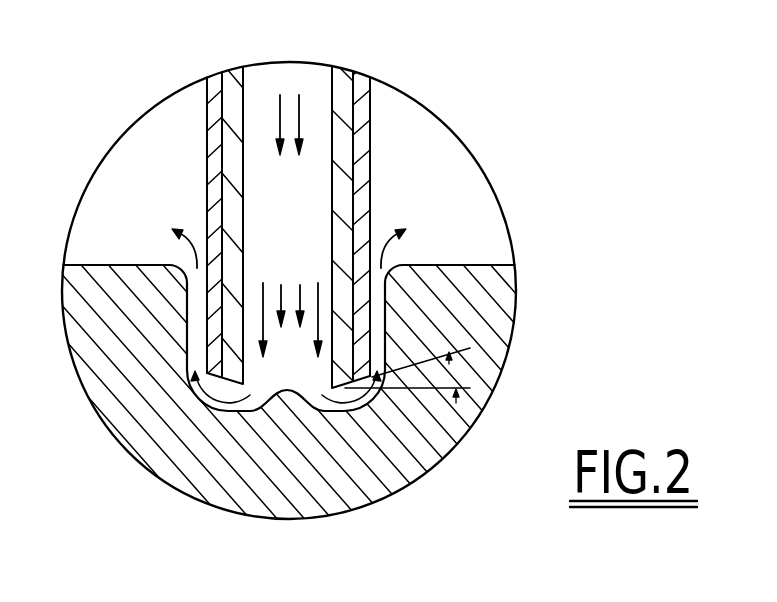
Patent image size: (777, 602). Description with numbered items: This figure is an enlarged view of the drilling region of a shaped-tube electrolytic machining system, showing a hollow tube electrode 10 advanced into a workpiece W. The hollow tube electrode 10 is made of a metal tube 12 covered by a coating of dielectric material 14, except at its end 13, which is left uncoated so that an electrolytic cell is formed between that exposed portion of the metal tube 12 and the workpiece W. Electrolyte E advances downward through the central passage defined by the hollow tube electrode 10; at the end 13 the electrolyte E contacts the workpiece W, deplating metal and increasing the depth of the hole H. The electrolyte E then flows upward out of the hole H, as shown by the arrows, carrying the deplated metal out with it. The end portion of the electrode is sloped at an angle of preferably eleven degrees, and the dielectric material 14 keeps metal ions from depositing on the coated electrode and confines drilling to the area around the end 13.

The hollow tube electrode 10 is at (140, 170).
The metal tube 12 is at (232, 153).
The end 13 is at (341, 392).
The dielectric material 14 is at (370, 172).
The workpiece W is at (500, 305).
The hole H is at (390, 327).
The electrolyte E is at (287, 72).